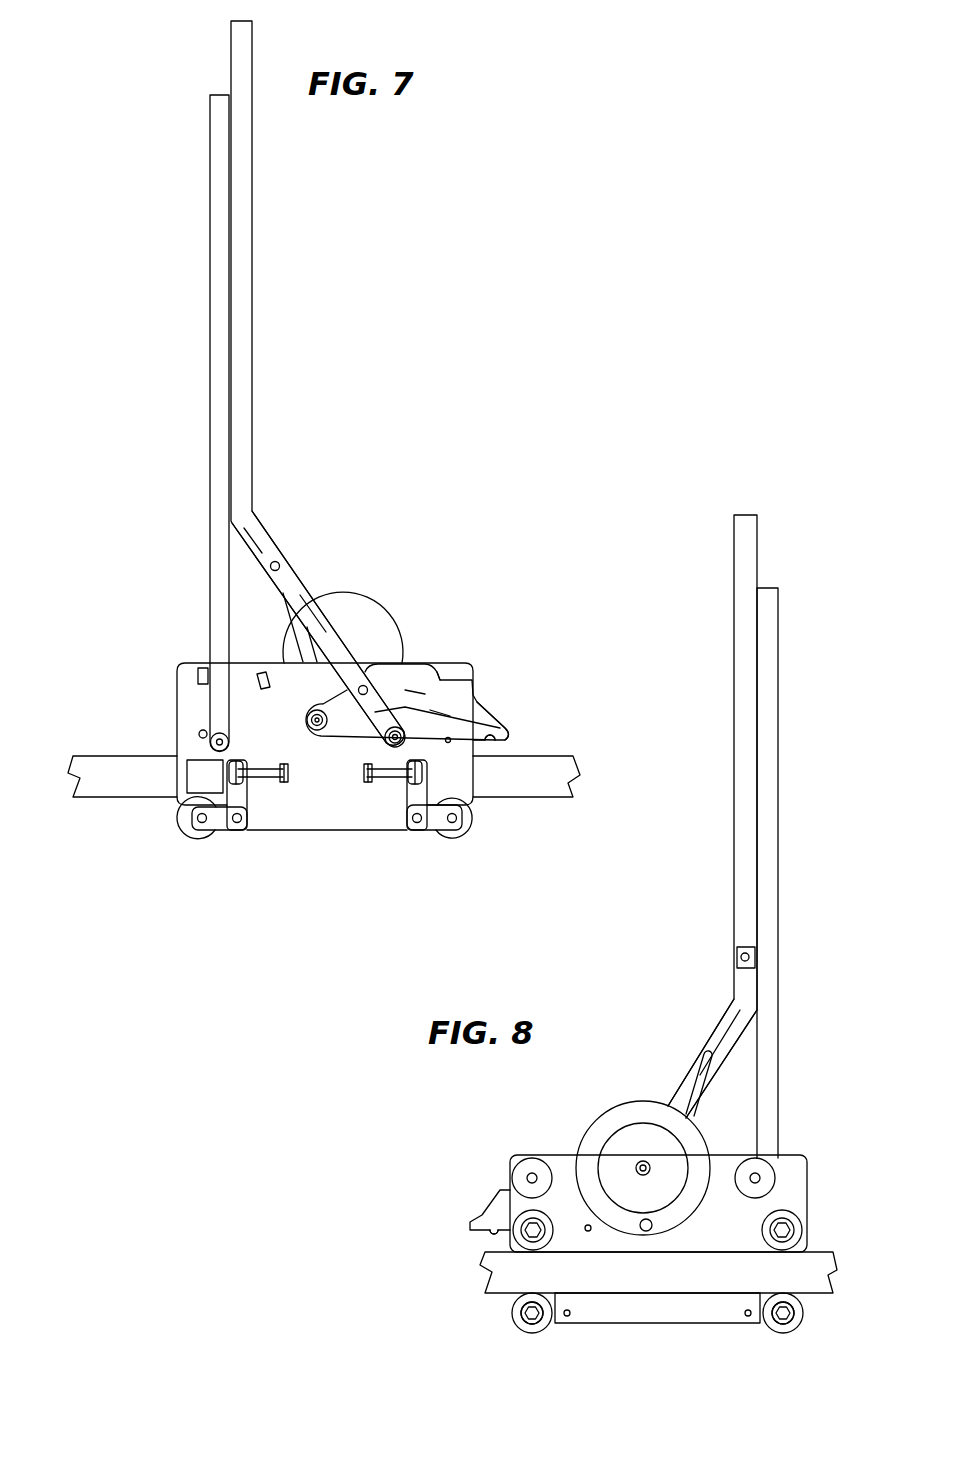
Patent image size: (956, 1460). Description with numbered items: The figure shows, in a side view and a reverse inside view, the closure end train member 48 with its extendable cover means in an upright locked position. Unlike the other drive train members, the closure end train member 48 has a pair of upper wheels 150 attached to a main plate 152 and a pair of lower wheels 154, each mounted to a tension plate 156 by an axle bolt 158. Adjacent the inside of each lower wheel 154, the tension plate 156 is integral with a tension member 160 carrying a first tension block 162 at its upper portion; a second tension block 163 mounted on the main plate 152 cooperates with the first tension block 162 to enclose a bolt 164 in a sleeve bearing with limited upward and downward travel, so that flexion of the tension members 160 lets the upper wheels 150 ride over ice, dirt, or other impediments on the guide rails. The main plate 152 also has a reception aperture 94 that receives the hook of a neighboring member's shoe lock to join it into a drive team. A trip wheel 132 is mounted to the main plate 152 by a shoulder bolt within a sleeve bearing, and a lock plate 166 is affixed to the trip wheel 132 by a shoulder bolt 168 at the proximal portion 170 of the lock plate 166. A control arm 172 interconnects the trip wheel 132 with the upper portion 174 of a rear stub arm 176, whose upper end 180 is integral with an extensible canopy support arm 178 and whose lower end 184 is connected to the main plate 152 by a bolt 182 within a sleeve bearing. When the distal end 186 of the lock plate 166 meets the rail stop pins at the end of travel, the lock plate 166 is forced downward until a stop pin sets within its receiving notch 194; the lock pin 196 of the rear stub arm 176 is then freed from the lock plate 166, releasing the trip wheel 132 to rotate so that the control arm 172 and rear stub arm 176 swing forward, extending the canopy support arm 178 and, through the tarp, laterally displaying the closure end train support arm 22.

In FIG. 7, the closure end train support arm 22 is at (222, 271).
In FIG. 8, the closure end train support arm 22 is at (770, 803).
In FIG. 7, the closure end train member 48 is at (433, 542).
In FIG. 8, the closure end train member 48 is at (640, 990).
In FIG. 7, the reception aperture 94 is at (197, 773).
In FIG. 8, the trip wheel 132 is at (600, 1130).
In FIG. 8, the upper wheels 150 is at (797, 1227).
In FIG. 7, the main plate 152 is at (258, 717).
In FIG. 8, the main plate 152 is at (788, 1175).
In FIG. 7, the lower wheels 154 is at (178, 828).
In FIG. 8, the lower wheels 154 is at (798, 1312).
In FIG. 7, the tension plate 156 is at (210, 838).
In FIG. 8, the axle bolt 158 is at (777, 1323).
In FIG. 7, the tension member 160 is at (248, 808).
In FIG. 7, the first tension block 162 is at (240, 832).
In FIG. 7, the second tension block 163 is at (285, 783).
In FIG. 7, the bolt 164 is at (232, 765).
In FIG. 7, the lock plate 166 is at (425, 678).
In FIG. 7, the shoulder bolt 168 is at (327, 713).
In FIG. 8, the shoulder bolt 168 is at (643, 1232).
In FIG. 7, the proximal portion 170 is at (322, 705).
In FIG. 7, the control arm 172 is at (293, 617).
In FIG. 8, the control arm 172 is at (697, 1095).
In FIG. 7, the upper portion 174 is at (287, 576).
In FIG. 8, the upper portion 174 is at (688, 1070).
In FIG. 7, the rear stub arm 176 is at (313, 600).
In FIG. 8, the rear stub arm 176 is at (710, 1033).
In FIG. 7, the extensible canopy support arm 178 is at (242, 350).
In FIG. 8, the extensible canopy support arm 178 is at (745, 782).
In FIG. 7, the upper end 180 is at (253, 532).
In FIG. 7, the bolt 182 is at (440, 712).
In FIG. 7, the lower end 184 is at (417, 694).
In FIG. 7, the distal end 186 is at (505, 734).
In FIG. 8, the distal end 186 is at (478, 1218).
In FIG. 7, the receiving notch 194 is at (495, 738).
In FIG. 8, the receiving notch 194 is at (497, 1233).
In FIG. 7, the lock pin 196 is at (433, 668).